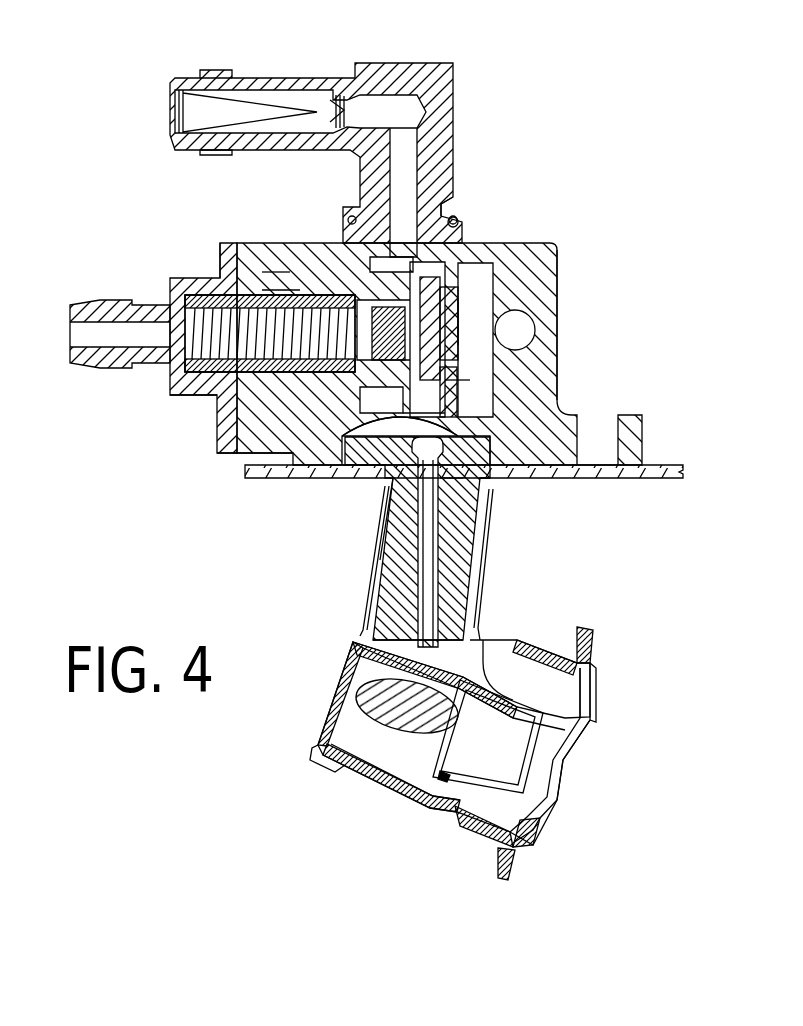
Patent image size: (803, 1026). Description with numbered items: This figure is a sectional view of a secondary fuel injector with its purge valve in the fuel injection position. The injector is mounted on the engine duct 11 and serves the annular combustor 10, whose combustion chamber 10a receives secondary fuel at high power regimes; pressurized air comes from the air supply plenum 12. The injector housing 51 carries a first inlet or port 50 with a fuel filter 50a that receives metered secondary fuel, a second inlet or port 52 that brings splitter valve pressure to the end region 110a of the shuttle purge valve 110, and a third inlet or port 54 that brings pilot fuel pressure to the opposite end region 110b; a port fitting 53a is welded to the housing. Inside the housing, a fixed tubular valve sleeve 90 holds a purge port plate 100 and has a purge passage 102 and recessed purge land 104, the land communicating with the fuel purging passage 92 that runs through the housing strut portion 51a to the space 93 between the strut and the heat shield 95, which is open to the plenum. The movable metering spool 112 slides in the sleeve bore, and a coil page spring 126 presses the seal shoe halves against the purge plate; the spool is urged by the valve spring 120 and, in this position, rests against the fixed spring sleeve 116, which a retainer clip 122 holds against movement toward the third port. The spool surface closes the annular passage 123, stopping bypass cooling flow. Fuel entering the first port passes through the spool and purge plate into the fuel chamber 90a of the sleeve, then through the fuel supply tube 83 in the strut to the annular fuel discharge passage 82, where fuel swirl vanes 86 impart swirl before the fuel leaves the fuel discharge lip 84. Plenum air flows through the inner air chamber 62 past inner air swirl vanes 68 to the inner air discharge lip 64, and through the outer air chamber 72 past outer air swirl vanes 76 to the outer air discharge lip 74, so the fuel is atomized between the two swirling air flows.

The annular combustor 10 is at (592, 648).
The combustion chamber 10a is at (670, 817).
The engine duct 11 is at (262, 482).
The air supply plenum 12 is at (298, 690).
The first inlet or port 50 is at (300, 78).
The fuel filter 50a is at (277, 118).
The injector housing 51 is at (528, 242).
The housing strut portion 51a is at (407, 537).
The second inlet or port 52 is at (430, 311).
The inlet or port fitting 53a is at (448, 190).
The third inlet or port 54 is at (117, 306).
The inner air chamber 62 is at (500, 766).
The inner air discharge lip 64 is at (558, 780).
The inner air swirl vanes 68 is at (350, 770).
The outer air chamber 72 is at (528, 813).
The outer air discharge lip 74 is at (590, 727).
The outer air swirl vanes 76 is at (485, 817).
The annular fuel discharge passage 82 is at (565, 698).
The fuel supply tube 83 is at (432, 538).
The fuel discharge lip 84 is at (568, 743).
The fuel swirl vanes 86 is at (470, 663).
The valve sleeve 90 is at (324, 431).
The fuel chamber 90a is at (392, 478).
The fuel purging passage 92 is at (490, 480).
The space 93 is at (467, 572).
The heat shield 95 is at (373, 596).
The purge port plate 100 is at (368, 438).
The purge passage 102 is at (460, 412).
The recessed purge land 104 is at (448, 443).
The shuttle purge valve 110 is at (470, 300).
The end region of shuttle purge valve 110a is at (472, 324).
The second end region of shuttle purge valve 110b is at (290, 283).
The metering spool 112 is at (318, 283).
The spring sleeve 116 is at (222, 290).
The valve spring 120 is at (173, 393).
The retainer clip 122 is at (248, 388).
The annular passage 123 is at (276, 282).
The coil page spring 126 is at (455, 220).